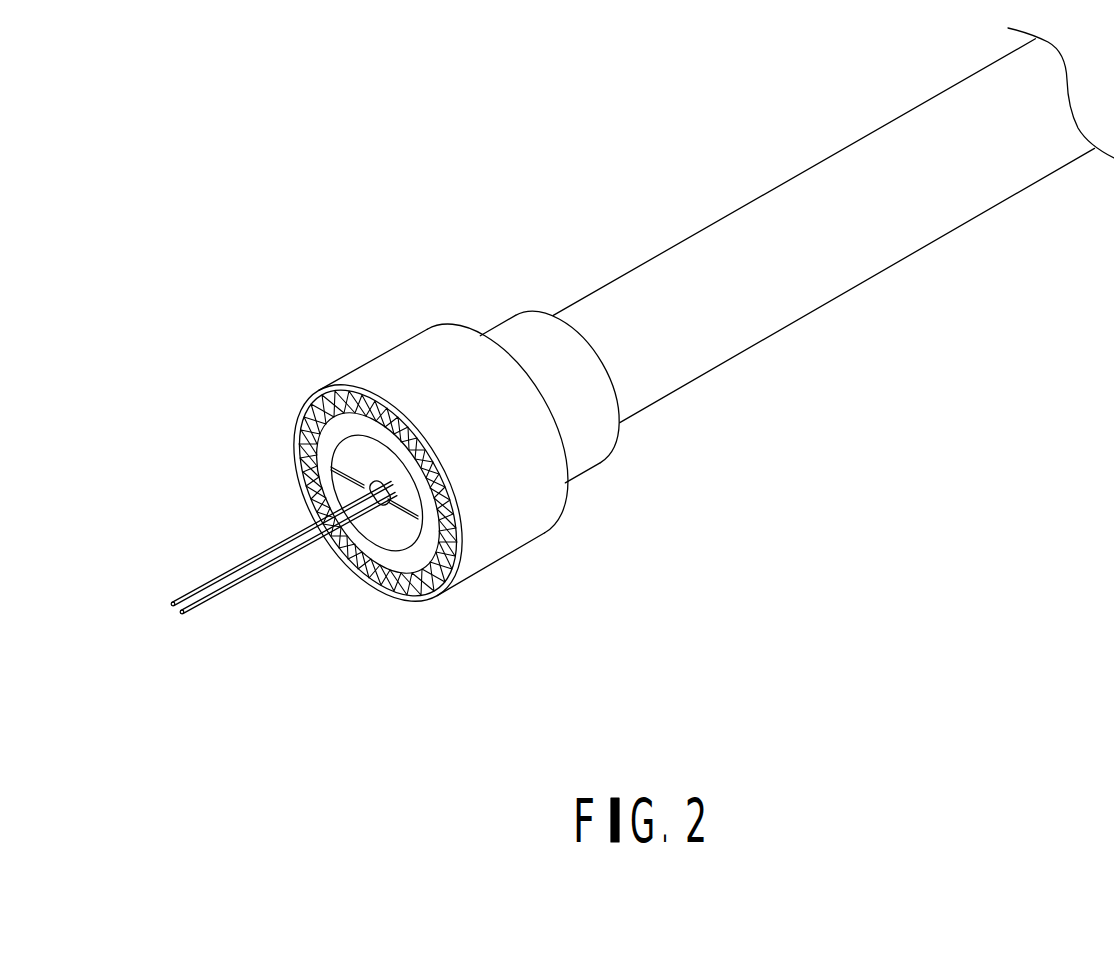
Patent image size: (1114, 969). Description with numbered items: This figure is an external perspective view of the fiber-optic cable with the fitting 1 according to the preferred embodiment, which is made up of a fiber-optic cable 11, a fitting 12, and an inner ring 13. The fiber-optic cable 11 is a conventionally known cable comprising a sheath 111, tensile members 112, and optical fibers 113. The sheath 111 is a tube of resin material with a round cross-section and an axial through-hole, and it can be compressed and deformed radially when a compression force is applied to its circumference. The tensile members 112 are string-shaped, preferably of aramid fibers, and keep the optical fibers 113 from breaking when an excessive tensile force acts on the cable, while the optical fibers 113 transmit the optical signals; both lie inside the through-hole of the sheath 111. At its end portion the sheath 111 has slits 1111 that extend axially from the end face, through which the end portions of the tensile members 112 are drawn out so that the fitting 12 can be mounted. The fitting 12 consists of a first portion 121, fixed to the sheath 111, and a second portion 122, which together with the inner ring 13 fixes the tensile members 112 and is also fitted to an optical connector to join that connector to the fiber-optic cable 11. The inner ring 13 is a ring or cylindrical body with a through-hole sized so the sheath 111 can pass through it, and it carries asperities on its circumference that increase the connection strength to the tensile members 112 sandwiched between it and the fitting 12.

The fiber-optic cable with the fitting 1 is at (642, 377).
The fiber-optic cable 11 is at (830, 350).
The sheath 111 is at (382, 528).
The slits 1111 is at (330, 477).
The tensile members 112 is at (437, 583).
The optical fibers 113 is at (218, 600).
The fitting 12 is at (439, 444).
The first portion 121 is at (518, 323).
The second portion 122 is at (402, 362).
The inner ring 13 is at (335, 492).